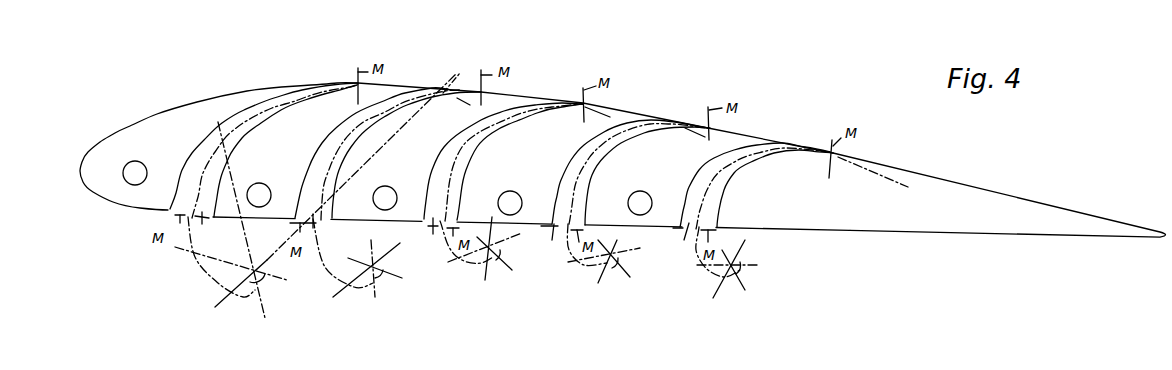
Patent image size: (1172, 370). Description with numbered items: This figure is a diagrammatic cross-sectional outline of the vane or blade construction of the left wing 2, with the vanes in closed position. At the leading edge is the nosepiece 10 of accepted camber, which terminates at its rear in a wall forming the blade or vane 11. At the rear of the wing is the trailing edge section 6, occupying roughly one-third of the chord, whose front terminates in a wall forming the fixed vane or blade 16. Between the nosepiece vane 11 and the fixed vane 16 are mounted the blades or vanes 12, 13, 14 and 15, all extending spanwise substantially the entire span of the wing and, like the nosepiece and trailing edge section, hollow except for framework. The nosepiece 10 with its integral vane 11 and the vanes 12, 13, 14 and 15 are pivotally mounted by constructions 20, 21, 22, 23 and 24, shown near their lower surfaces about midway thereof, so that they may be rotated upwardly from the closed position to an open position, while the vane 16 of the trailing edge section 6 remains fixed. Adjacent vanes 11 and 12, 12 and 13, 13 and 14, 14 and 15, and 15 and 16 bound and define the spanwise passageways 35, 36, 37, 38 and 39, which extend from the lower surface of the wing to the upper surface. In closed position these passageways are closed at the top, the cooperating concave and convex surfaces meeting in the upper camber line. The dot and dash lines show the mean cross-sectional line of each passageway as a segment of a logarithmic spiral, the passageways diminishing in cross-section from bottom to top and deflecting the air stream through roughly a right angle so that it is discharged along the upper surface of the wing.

The wing 2 is at (650, 109).
The trailing edge section 6 is at (921, 176).
The nosepiece 10 is at (158, 113).
The blade or vane 11 is at (205, 143).
The blade or vane 12 is at (330, 152).
The blade or vane 13 is at (457, 156).
The blade or vane 14 is at (582, 164).
The blade or vane 15 is at (707, 177).
The vane or blade 16 is at (807, 165).
The pivotal mounting construction 20 is at (134, 162).
The pivotal mounting construction 21 is at (259, 183).
The pivotal mounting construction 22 is at (385, 186).
The pivotal mounting construction 23 is at (507, 191).
The pivotal mounting construction 24 is at (636, 192).
The spanwise passageway 35 is at (316, 195).
The spanwise passageway 36 is at (376, 193).
The spanwise passageway 37 is at (499, 192).
The spanwise passageway 38 is at (619, 203).
The spanwise passageway 39 is at (746, 223).